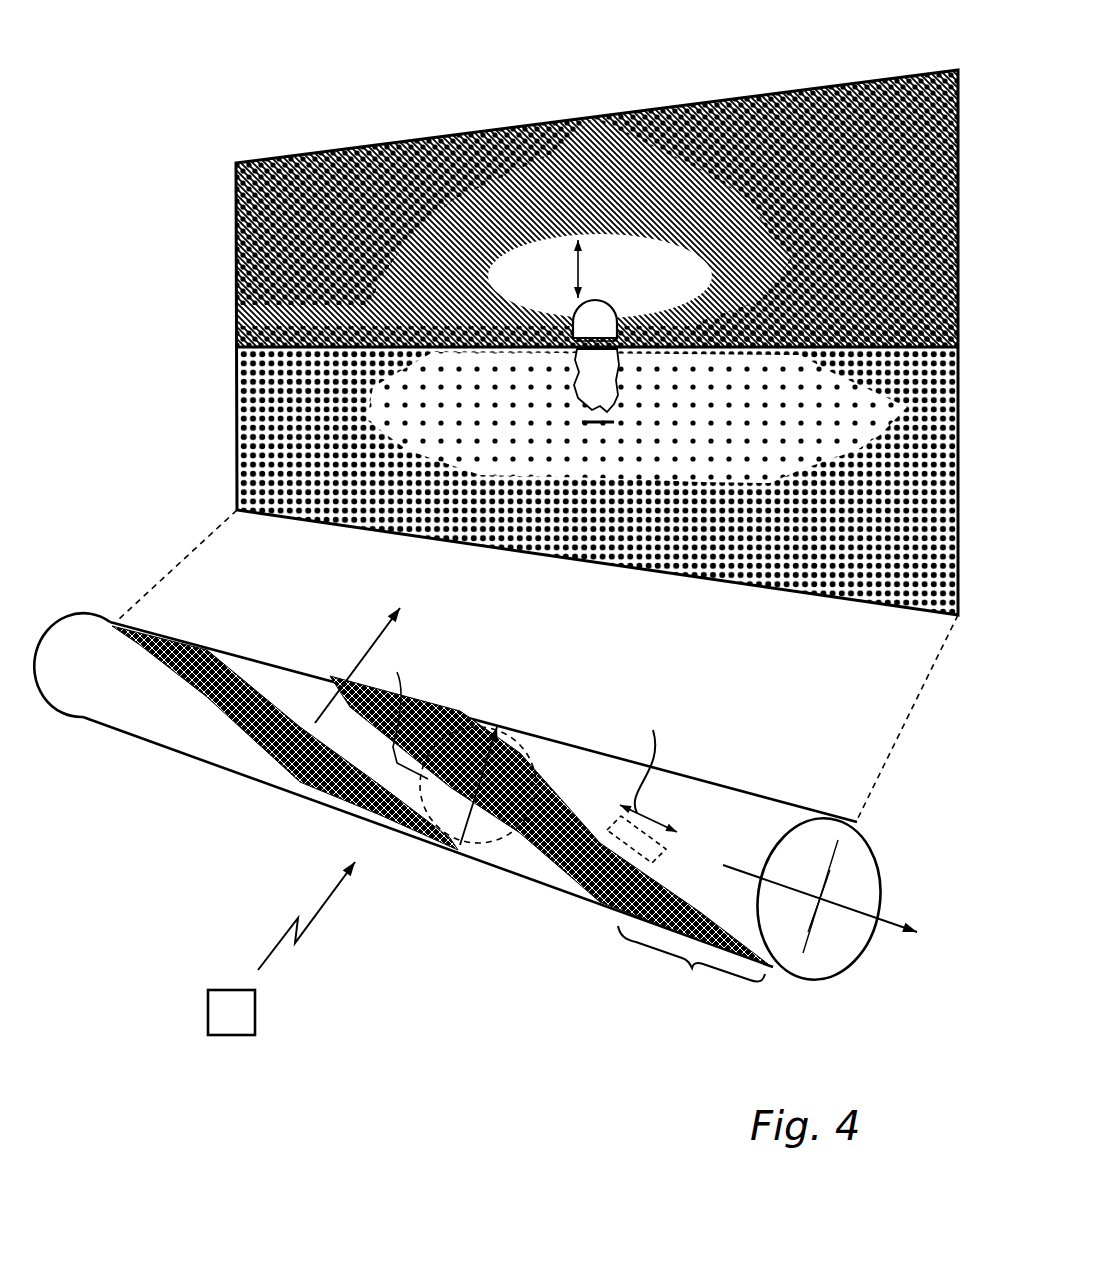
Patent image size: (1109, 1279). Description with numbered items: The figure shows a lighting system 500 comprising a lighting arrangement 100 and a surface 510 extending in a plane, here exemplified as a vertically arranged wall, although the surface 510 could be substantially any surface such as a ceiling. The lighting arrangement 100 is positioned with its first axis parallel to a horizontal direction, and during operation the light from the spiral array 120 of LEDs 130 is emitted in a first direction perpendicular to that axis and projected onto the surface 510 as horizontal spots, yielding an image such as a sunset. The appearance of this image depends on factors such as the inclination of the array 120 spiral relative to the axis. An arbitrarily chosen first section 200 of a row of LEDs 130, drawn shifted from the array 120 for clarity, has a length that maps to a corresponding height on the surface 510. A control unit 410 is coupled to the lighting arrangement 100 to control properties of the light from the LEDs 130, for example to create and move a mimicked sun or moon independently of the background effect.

The lighting system 500 is at (140, 452).
The surface 510 is at (143, 645).
The lighting arrangement 100 is at (752, 720).
The LEDs 130 is at (447, 713).
The array of LEDs 120 is at (691, 965).
The first section 200 is at (688, 813).
The control unit 410 is at (253, 1010).